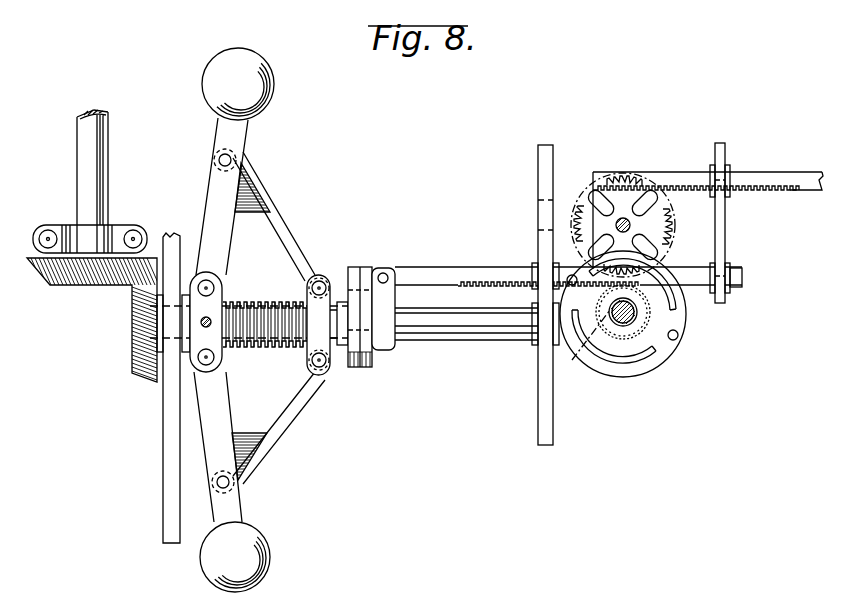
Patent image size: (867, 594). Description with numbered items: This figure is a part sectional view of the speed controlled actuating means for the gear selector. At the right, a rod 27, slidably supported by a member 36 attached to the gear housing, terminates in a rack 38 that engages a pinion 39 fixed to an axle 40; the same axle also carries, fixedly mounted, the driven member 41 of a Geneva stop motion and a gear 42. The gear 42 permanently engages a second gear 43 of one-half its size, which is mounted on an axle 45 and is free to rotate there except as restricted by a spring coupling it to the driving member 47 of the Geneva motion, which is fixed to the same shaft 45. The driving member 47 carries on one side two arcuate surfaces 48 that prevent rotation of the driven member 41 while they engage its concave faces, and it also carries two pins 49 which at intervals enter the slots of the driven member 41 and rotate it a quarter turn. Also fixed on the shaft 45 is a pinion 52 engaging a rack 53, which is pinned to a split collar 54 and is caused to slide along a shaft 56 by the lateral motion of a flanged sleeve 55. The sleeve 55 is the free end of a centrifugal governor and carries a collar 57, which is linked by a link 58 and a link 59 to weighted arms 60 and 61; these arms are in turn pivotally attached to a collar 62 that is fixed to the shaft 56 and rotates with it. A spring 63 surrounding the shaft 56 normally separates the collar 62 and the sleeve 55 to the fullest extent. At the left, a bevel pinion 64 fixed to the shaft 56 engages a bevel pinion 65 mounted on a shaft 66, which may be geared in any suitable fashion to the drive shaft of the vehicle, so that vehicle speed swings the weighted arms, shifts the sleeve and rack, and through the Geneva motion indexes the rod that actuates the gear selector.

The rod 27 is at (793, 176).
The supporting member 36 is at (729, 144).
The rack 38 is at (671, 176).
The pinion 39 is at (656, 210).
The axle 40 is at (634, 225).
The driven member of the Geneva stop motion 41 is at (660, 233).
The gear 42 is at (589, 201).
The second gear 43 is at (577, 354).
The axle 45 is at (620, 327).
The driving member of the Geneva motion 47 is at (627, 368).
The arcuate surfaces 48 is at (653, 350).
The pins 49 is at (572, 275).
The pinion 52 is at (595, 303).
The rack 53 is at (499, 272).
The split collar 54 is at (376, 273).
The flanged sleeve 55 is at (341, 298).
The shaft 56 is at (450, 338).
The collar 57 is at (324, 372).
The link 58 is at (282, 423).
The link 59 is at (268, 208).
The weighted arm 60 is at (221, 405).
The weighted arm 61 is at (210, 203).
The collar 62 is at (221, 293).
The spring 63 is at (262, 346).
The bevel pinion 64 is at (132, 342).
The bevel pinion 65 is at (78, 288).
The shaft 66 is at (104, 168).